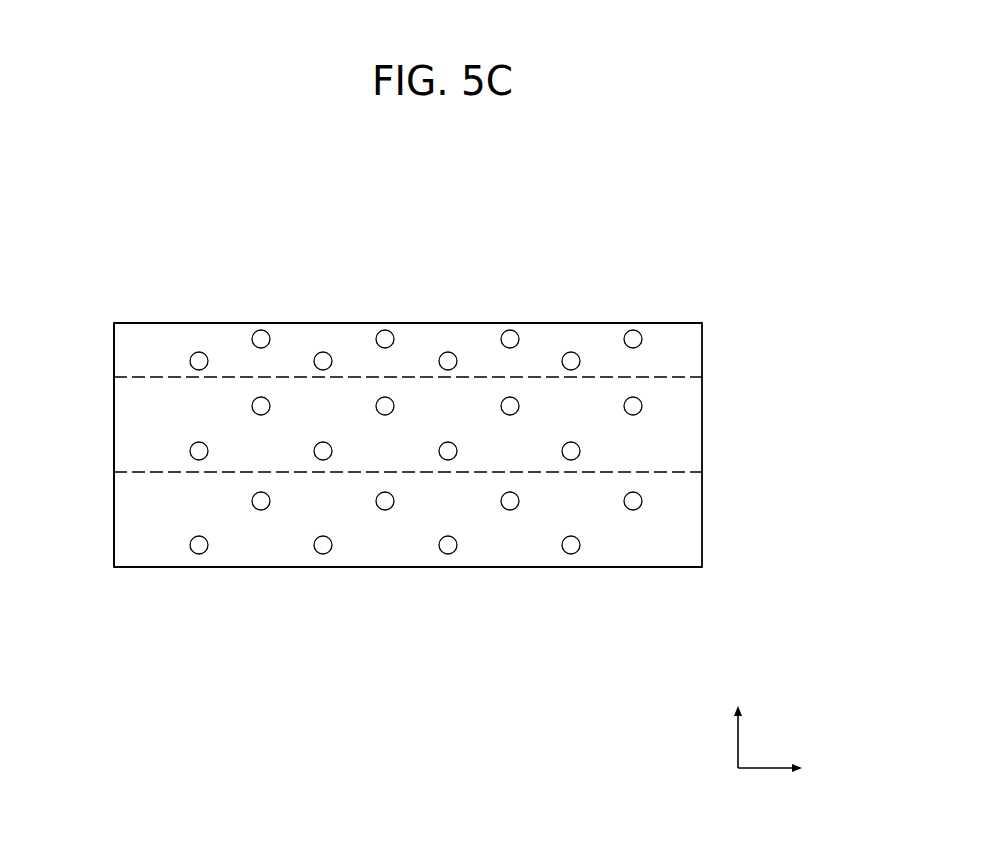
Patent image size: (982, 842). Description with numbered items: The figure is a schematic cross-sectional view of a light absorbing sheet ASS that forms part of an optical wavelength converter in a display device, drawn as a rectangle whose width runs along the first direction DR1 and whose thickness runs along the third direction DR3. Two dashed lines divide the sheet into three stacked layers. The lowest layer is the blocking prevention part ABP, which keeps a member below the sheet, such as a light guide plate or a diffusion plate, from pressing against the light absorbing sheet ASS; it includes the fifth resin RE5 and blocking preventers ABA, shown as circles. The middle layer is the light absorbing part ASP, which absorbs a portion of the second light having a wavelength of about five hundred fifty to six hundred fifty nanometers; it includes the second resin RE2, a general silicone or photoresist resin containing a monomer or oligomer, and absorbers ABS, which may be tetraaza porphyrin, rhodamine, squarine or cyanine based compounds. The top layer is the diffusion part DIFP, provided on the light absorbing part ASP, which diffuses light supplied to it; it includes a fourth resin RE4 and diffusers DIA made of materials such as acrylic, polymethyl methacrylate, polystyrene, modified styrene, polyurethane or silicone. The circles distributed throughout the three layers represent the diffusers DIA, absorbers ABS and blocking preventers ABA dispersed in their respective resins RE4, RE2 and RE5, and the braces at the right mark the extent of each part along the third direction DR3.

The light absorbing sheet ASS is at (408, 397).
The diffusers DIA is at (385, 330).
The absorbers ABS is at (190, 450).
The blocking preventers ABA is at (447, 555).
The second resin RE2 is at (126, 415).
The fourth resin RE4 is at (665, 330).
The fifth resin RE5 is at (657, 555).
The diffusion part DIFP is at (486, 311).
The light absorbing part ASP is at (402, 430).
The blocking prevention part ABP is at (480, 562).
The third direction DR3 is at (738, 724).
The first direction DR1 is at (789, 770).